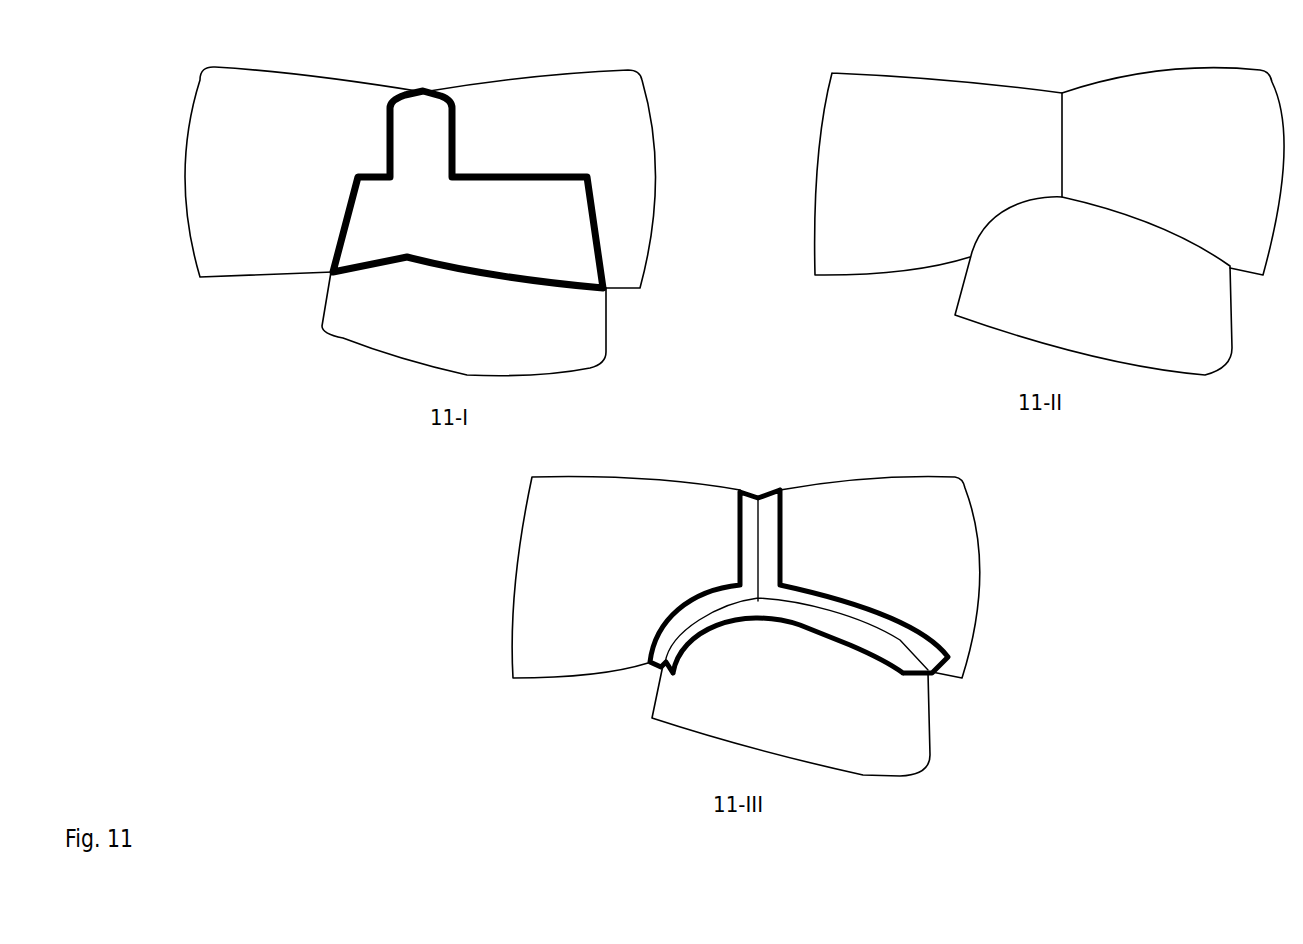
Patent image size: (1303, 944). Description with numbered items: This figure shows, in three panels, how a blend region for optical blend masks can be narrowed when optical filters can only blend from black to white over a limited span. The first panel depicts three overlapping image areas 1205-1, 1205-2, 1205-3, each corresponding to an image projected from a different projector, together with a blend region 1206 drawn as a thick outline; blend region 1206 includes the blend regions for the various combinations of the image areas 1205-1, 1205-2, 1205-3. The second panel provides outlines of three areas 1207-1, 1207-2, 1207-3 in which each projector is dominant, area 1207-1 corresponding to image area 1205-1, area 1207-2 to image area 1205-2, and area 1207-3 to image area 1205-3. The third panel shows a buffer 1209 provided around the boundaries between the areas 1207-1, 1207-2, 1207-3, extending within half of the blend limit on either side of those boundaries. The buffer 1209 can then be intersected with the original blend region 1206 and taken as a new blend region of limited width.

The image area 1205-1 is at (290, 146).
The image area 1205-2 is at (596, 137).
The image area 1205-3 is at (470, 324).
The blend region 1206 is at (466, 231).
The area where projector is dominant 1207-1 is at (920, 138).
The area where projector is dominant 1207-2 is at (1248, 137).
The area where projector is dominant 1207-3 is at (1141, 322).
The buffer 1209 is at (765, 494).